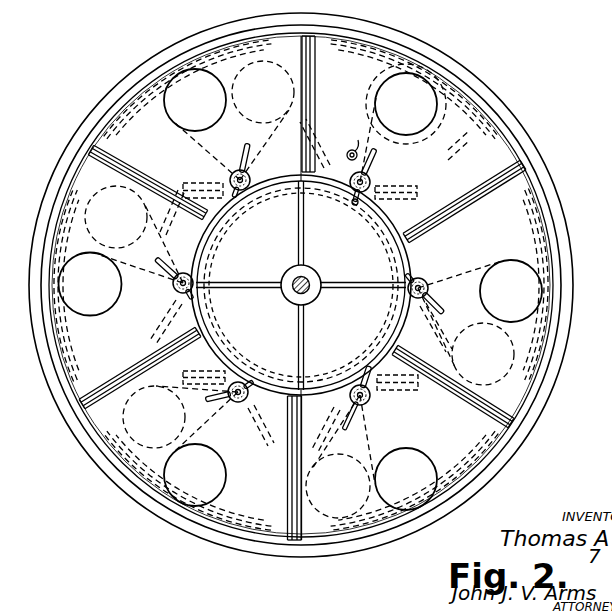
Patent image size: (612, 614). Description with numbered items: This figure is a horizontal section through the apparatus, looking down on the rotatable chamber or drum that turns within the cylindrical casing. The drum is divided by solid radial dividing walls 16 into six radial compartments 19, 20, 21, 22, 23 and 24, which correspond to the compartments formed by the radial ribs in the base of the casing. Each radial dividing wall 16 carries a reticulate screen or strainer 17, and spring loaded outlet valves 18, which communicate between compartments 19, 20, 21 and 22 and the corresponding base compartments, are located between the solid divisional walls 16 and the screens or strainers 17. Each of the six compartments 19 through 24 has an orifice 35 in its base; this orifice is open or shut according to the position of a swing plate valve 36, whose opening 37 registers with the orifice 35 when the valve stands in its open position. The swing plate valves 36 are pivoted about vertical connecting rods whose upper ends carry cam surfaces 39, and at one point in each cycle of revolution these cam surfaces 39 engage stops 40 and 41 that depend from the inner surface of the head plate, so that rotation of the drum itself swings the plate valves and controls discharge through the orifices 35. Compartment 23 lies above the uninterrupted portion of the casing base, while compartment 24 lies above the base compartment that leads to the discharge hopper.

The radial dividing wall 16 is at (474, 378).
The reticulate screen or strainer 17 is at (100, 145).
The spring loaded outlet valve 18 is at (70, 417).
The radial compartment 19 is at (148, 110).
The radial compartment 20 is at (80, 345).
The radial compartment 21 is at (232, 507).
The radial compartment 22 is at (452, 467).
The radial compartment 23 is at (510, 235).
The radial compartment 24 is at (500, 152).
The orifice 35 is at (110, 292).
The swing plate valve 36 is at (140, 313).
The opening 37 is at (56, 224).
The cam surface 39 is at (168, 281).
The stop 40 is at (353, 139).
The stop 41 is at (356, 207).